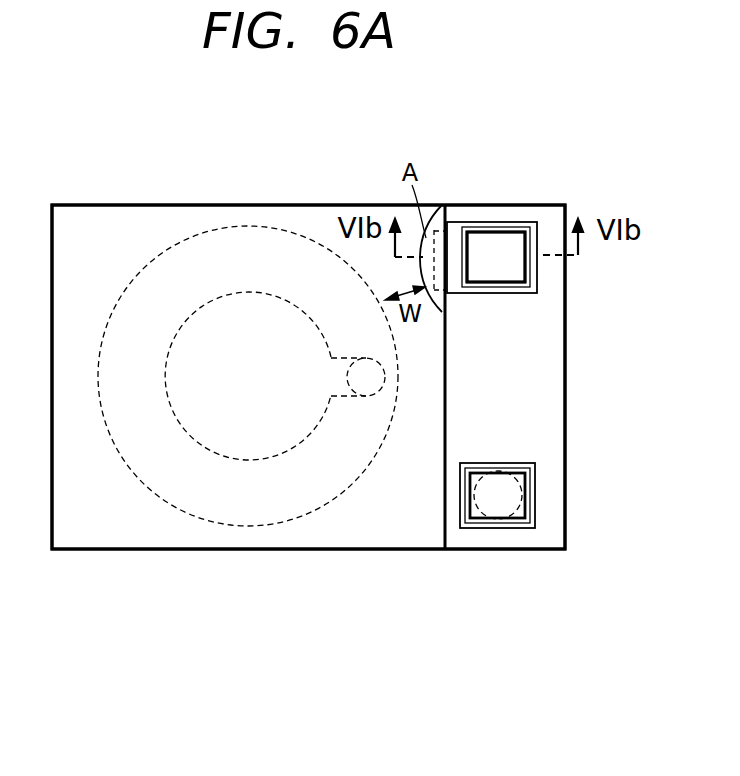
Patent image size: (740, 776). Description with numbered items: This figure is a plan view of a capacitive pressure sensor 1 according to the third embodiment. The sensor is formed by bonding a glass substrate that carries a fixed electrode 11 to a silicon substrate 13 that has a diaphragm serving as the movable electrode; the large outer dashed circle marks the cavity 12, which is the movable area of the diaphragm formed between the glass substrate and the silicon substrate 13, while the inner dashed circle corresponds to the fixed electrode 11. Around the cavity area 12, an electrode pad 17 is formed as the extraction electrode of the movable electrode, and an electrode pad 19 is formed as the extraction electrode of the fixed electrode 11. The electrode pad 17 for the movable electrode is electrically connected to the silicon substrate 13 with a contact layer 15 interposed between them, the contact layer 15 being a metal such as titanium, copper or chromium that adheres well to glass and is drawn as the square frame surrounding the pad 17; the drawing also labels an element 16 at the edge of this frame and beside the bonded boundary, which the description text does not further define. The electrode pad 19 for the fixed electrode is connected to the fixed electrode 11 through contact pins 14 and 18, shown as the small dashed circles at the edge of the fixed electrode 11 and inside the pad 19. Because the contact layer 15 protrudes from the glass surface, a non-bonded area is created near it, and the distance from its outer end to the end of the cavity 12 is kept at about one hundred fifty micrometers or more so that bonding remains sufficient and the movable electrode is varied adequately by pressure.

The capacitive pressure sensor 1 is at (203, 173).
The fixed electrode 11 is at (253, 432).
The cavity 12 is at (202, 495).
The silicon substrate 13 is at (112, 533).
The contact pin 14 is at (378, 378).
The contact layer 15 is at (497, 222).
The frame 16 is at (441, 205).
The electrode pad 17 is at (513, 265).
The contact pin 18 is at (500, 505).
The electrode pad 19 is at (518, 508).